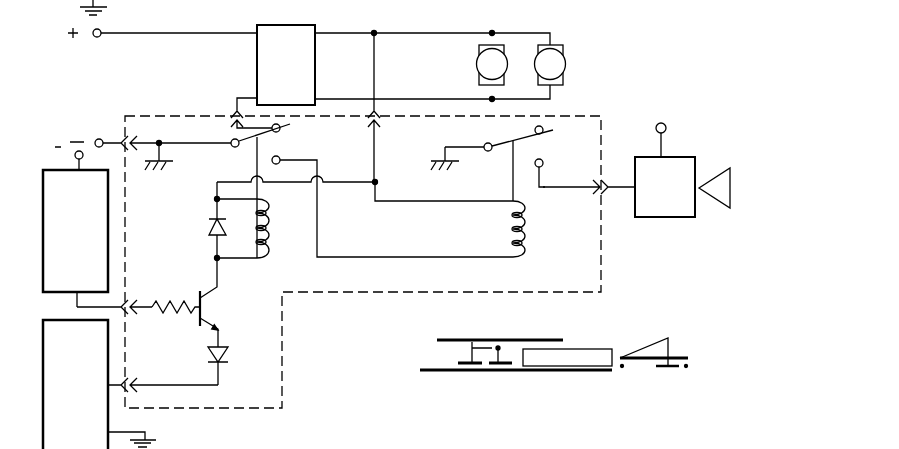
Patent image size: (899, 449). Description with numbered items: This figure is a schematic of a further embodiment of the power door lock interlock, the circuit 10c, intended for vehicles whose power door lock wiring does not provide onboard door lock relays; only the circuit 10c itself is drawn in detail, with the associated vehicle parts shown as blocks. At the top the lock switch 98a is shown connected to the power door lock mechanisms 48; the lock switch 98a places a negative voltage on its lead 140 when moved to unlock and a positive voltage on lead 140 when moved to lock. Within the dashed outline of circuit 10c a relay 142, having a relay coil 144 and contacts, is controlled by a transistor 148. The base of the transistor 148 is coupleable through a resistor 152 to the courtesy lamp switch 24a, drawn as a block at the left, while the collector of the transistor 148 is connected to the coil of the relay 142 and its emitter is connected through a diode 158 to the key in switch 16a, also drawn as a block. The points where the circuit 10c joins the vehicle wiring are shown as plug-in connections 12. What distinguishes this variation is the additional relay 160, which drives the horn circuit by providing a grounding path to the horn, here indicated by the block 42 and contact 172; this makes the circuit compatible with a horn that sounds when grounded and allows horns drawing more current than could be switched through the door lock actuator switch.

The electrical connector 12 is at (222, 102).
The lock switch 98a is at (315, 31).
The power door lock mechanisms 48 is at (541, 62).
The courtesy lamp switch 24a is at (105, 196).
The relay 142 is at (274, 192).
The relay coil 144 is at (263, 255).
The transistor 148 is at (206, 303).
The resistor 152 is at (176, 291).
The diode 158 is at (224, 358).
The additional relay 160 is at (538, 199).
The alarm relay 42 is at (668, 207).
The key in switch 16a is at (108, 423).
The circuit 10c is at (512, 300).
The lead 140 is at (336, 448).
The relay contact 172 is at (439, 437).